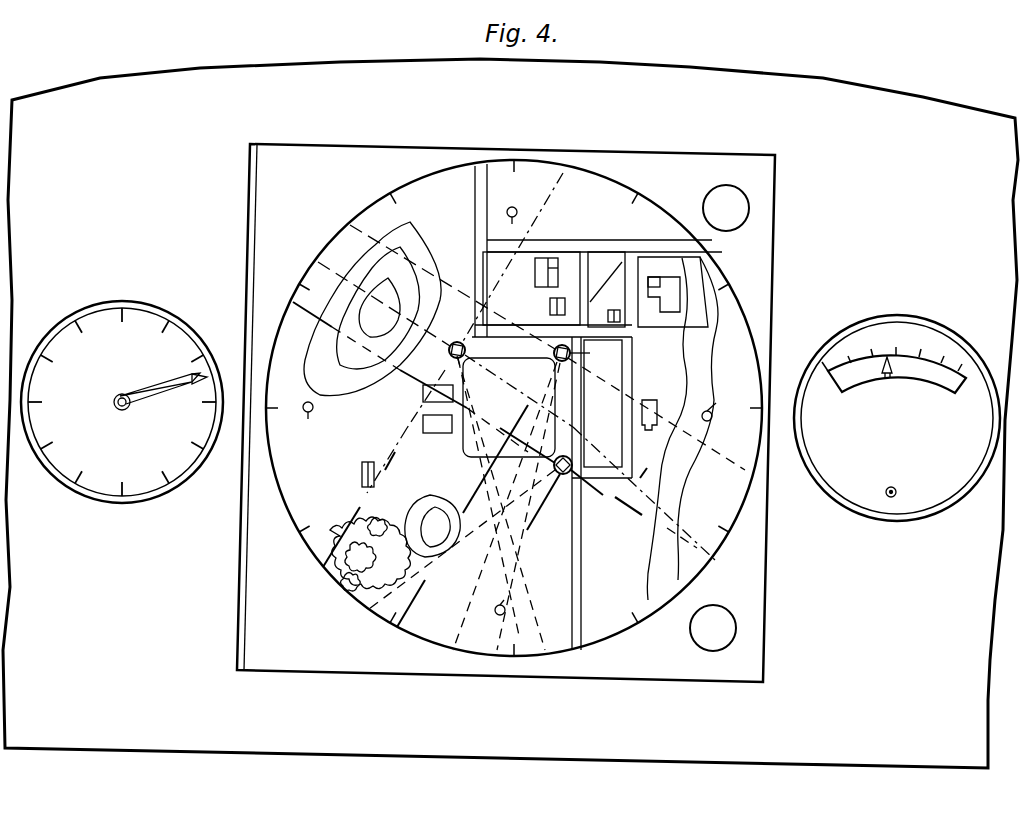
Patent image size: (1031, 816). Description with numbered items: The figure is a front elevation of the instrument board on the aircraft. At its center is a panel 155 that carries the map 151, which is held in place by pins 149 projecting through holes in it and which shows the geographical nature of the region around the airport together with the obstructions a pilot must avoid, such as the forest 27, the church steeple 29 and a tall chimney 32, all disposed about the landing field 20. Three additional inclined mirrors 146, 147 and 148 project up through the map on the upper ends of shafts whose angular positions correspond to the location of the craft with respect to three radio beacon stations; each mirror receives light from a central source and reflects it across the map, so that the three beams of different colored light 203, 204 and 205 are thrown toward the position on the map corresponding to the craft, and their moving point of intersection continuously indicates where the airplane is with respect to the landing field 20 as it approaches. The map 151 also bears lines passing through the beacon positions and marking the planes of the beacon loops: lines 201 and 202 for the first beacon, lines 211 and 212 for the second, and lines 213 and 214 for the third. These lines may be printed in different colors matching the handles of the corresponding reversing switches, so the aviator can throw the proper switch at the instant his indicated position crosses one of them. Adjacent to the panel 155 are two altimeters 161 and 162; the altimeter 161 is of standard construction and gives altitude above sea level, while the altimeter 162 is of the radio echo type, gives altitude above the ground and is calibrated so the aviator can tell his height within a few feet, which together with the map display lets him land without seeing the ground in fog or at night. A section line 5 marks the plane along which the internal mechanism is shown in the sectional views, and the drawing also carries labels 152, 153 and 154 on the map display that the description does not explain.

The section line 5- 5 is at (805, 72).
The panel 155 is at (765, 178).
The map 151 is at (600, 637).
The altimeter 161 is at (120, 301).
The altimeter 162 is at (900, 316).
The pins 149 is at (522, 411).
The inclined mirror 148 is at (457, 341).
The inclined mirror 147 is at (553, 353).
The station marker lead 153 is at (594, 353).
The inclined mirror 146 is at (561, 476).
The buildings 154 is at (445, 374).
The bearing line 152 is at (595, 498).
The church steeple 29 is at (538, 285).
The tall chimney 32 is at (670, 313).
The landing field 20 is at (465, 455).
The forest 27 is at (346, 524).
The line 201 is at (543, 503).
The line 202 is at (530, 532).
The beam of colored light 203 is at (460, 548).
The beam of colored light 204 is at (461, 610).
The beam of colored light 205 is at (535, 606).
The line 211 is at (724, 462).
The line 212 is at (476, 492).
The line 213 is at (661, 508).
The line 214 is at (398, 452).